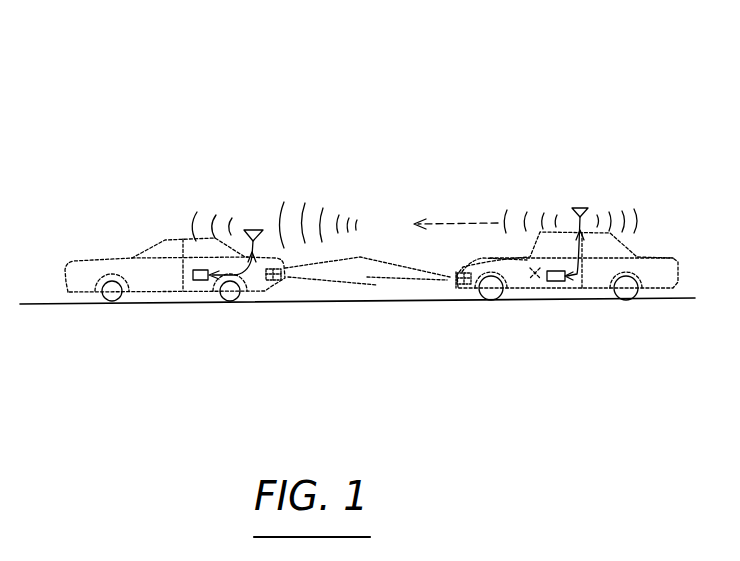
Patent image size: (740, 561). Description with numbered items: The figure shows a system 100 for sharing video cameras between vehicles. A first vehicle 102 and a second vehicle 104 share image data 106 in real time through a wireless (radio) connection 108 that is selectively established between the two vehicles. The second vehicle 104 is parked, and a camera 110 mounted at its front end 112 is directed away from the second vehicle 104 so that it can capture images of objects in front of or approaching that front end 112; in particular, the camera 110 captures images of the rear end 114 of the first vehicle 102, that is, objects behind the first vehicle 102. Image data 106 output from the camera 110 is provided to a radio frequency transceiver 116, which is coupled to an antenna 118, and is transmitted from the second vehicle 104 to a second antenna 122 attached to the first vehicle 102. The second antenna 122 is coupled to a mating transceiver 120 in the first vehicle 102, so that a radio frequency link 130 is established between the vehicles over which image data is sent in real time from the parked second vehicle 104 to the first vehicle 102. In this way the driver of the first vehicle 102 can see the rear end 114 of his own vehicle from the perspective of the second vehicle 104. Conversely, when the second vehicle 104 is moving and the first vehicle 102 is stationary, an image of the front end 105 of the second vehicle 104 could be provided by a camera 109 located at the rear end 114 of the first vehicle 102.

The system 100 is at (560, 48).
The first vehicle 102 is at (155, 285).
The second vehicle 104 is at (549, 292).
The front end of the second vehicle 105 is at (459, 315).
The image data 106 is at (470, 228).
The wireless connection 108 is at (305, 204).
The camera 109 is at (280, 290).
The camera 110 is at (456, 292).
The front end of the second vehicle 112 is at (440, 289).
The rear end of the first vehicle 114 is at (263, 288).
The radio frequency transceiver 116 is at (558, 292).
The antenna 118 is at (587, 218).
The mating transceiver 120 is at (198, 283).
The second antenna 122 is at (259, 230).
The radio frequency link 130 is at (338, 213).